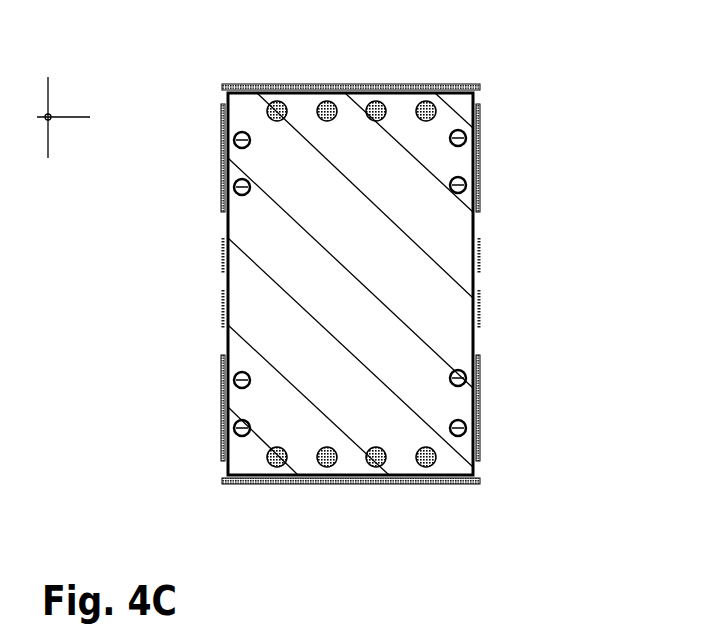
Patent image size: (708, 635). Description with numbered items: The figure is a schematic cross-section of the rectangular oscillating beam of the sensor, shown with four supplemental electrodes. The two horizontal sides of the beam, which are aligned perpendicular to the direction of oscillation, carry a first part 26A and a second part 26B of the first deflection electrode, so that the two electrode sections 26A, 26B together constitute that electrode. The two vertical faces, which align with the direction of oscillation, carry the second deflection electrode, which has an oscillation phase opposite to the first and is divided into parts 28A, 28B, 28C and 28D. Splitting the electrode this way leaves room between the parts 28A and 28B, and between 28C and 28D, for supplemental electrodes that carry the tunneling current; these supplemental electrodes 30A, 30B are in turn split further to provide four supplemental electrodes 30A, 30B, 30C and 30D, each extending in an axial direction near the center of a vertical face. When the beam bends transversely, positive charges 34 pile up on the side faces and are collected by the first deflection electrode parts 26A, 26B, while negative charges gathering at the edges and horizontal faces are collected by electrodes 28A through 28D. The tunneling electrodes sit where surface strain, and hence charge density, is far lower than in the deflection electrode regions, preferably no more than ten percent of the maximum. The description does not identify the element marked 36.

The first part of first deflection electrode 26A is at (352, 84).
The second part of first deflection electrode 26B is at (352, 484).
The first part of second deflection electrode 28A is at (221, 160).
The second part of second deflection electrode 28B is at (221, 412).
The second part of second deflection electrode 28C is at (480, 157).
The split part of deflection electrode 28D is at (480, 407).
The supplemental electrode 30A is at (221, 255).
The supplemental electrode 30B is at (480, 253).
The supplemental electrode 30C is at (221, 308).
The supplemental electrode 30D is at (480, 307).
The positive charges 34 is at (432, 102).
The screws 36 is at (234, 136).